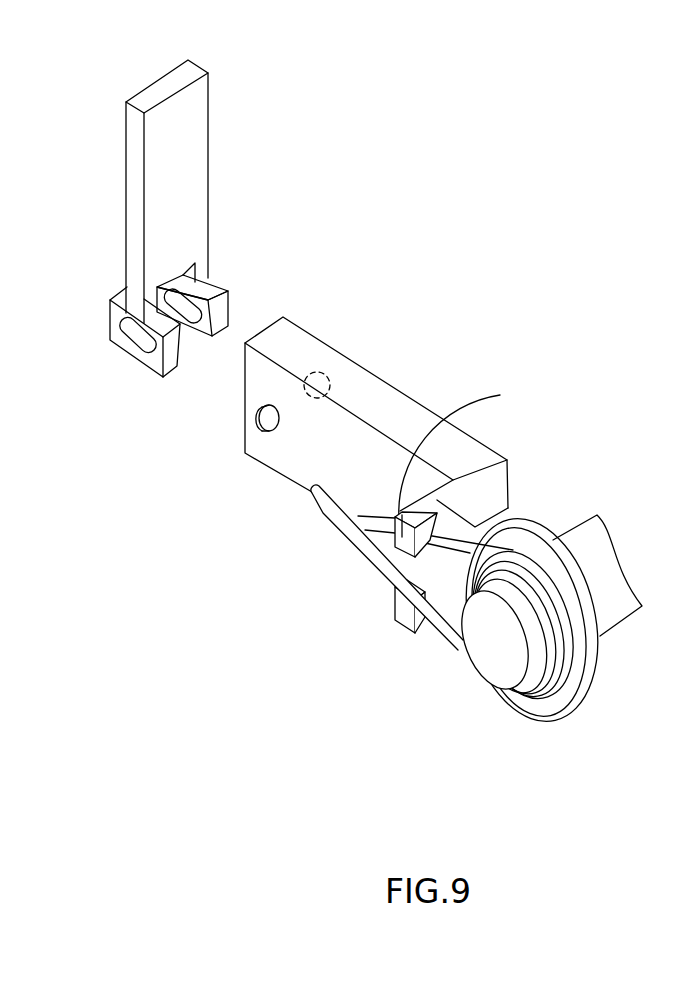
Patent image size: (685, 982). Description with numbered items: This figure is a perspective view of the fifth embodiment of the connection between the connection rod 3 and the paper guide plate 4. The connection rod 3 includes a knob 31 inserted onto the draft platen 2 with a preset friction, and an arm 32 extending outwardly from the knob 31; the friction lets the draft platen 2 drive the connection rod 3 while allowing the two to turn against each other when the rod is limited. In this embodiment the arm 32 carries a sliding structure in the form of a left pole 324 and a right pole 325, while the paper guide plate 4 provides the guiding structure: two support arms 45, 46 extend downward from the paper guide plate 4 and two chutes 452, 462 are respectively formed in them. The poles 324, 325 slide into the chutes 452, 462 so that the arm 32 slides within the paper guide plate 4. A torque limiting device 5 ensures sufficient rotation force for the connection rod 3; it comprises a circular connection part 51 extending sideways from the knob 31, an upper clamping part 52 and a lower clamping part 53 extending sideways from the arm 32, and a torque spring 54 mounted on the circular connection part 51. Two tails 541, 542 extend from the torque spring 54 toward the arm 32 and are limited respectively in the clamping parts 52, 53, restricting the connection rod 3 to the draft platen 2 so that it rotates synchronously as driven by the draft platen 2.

The draft platen 2 is at (488, 662).
The connection rod 3 is at (419, 543).
The paper guide plate 4 is at (187, 252).
The torque limiting device 5 is at (539, 657).
The knob 31 is at (596, 653).
The arm 32 is at (334, 404).
The support arm 45 is at (110, 365).
The support arm 46 is at (245, 270).
The circular connection part 51 is at (533, 677).
The upper clamping part 52 is at (403, 511).
The lower clamping part 53 is at (407, 618).
The torque spring 54 is at (570, 660).
The left pole 324 is at (258, 424).
The right pole 325 is at (327, 372).
The chute 452 is at (135, 341).
The chute 462 is at (197, 312).
The tail 541 is at (314, 495).
The tail 542 is at (320, 515).